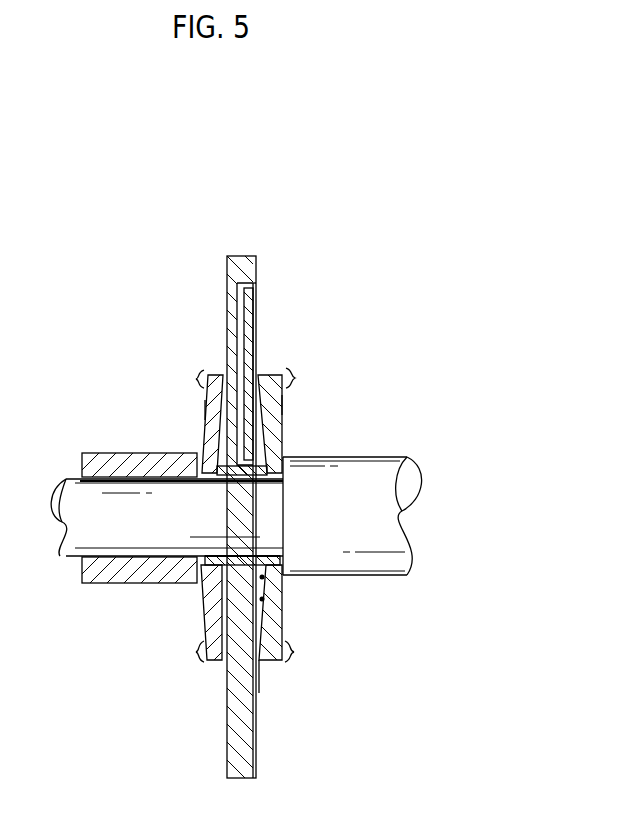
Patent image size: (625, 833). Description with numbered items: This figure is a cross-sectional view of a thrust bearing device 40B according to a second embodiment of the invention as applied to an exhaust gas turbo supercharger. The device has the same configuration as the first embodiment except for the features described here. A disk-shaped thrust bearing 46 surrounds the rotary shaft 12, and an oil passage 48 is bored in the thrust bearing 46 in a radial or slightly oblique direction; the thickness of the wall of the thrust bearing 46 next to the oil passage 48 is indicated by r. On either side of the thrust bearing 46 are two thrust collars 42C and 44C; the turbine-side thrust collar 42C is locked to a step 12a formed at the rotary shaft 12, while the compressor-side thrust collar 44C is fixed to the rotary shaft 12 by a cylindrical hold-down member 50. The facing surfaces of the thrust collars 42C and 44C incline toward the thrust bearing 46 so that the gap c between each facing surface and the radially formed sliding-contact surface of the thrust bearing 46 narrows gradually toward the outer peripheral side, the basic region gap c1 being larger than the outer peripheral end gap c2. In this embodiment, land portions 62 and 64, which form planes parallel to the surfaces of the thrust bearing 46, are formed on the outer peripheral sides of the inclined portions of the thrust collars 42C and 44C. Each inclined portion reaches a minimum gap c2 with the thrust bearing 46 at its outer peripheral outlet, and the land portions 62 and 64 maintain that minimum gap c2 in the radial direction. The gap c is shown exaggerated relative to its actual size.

The thrust bearing device 40B is at (176, 305).
The rotary shaft 12 is at (357, 457).
The step 12a is at (283, 565).
The hold-down member 50 is at (92, 452).
The thrust bearing 46 is at (239, 256).
The wall thickness r is at (259, 288).
The oil passage 48 is at (249, 328).
The land portion 64 is at (198, 378).
The thrust collar 44C is at (204, 408).
The land portion 62 is at (296, 378).
The thrust collar 42C is at (296, 398).
The basic region gap c1 is at (264, 580).
The gap c is at (264, 602).
The minimum gap c2 is at (240, 682).